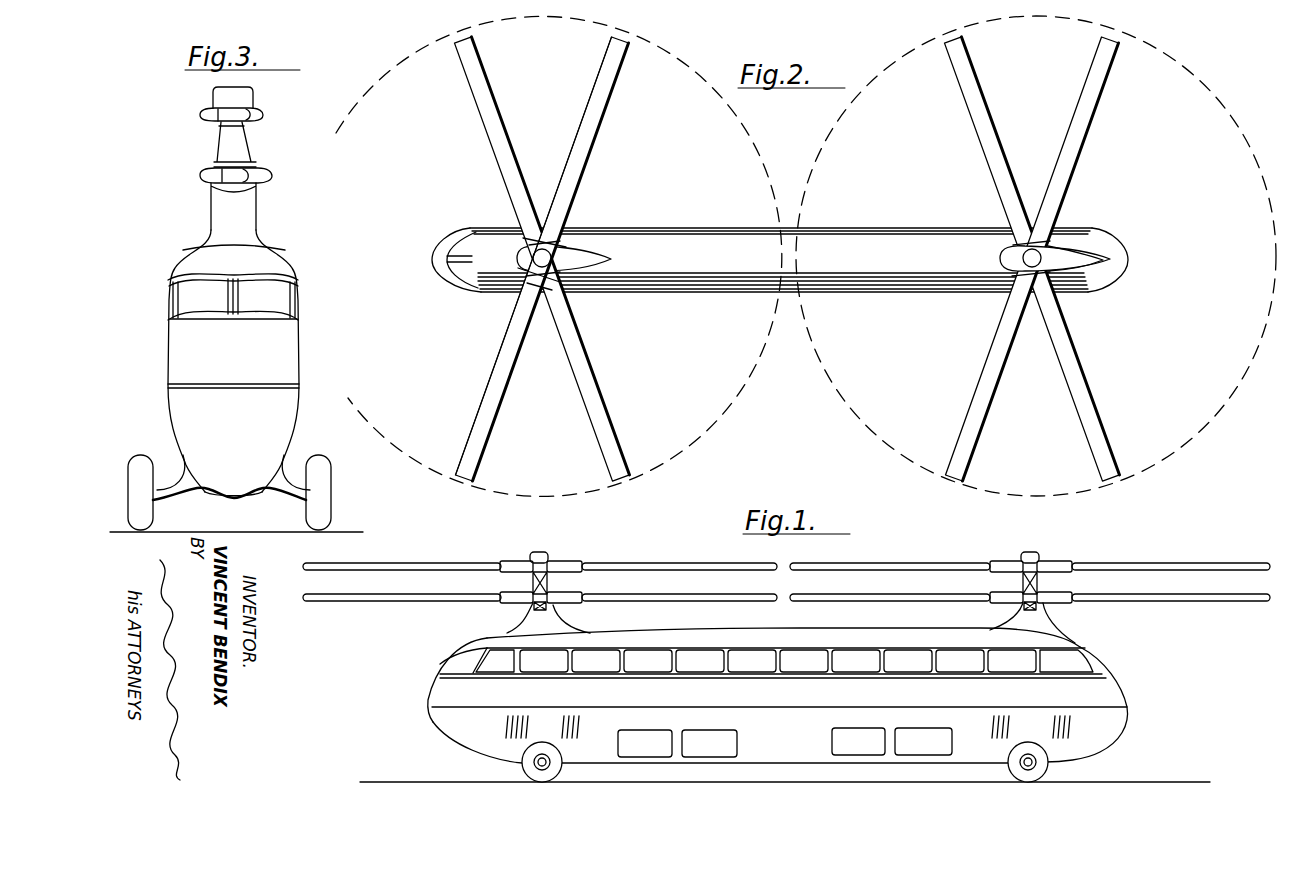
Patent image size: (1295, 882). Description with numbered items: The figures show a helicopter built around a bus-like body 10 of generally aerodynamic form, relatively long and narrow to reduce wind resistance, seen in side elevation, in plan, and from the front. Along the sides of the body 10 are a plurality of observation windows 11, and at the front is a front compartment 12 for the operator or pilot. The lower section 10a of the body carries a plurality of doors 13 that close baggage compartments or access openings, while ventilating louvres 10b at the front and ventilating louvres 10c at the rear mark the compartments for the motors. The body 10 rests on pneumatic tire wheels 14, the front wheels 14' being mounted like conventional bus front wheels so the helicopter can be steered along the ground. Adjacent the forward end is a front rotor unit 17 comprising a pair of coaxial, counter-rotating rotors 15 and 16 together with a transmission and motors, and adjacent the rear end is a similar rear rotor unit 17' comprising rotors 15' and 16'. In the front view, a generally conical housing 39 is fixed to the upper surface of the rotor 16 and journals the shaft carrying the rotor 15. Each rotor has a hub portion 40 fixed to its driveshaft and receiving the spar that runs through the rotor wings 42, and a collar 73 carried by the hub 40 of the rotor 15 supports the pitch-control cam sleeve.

In FIG. 3, the bus-like body 10 is at (165, 366).
In FIG. 2, the bus-like body 10 is at (834, 226).
In FIG. 1, the bus-like body 10 is at (1124, 679).
In FIG. 3, the lower section of the body 10a is at (202, 430).
In FIG. 1, the lower section of the body 10a is at (1103, 728).
In FIG. 1, the ventilating louvres 10b is at (560, 725).
In FIG. 1, the ventilating louvres 10c is at (1012, 730).
In FIG. 3, the observation windows 11 is at (250, 292).
In FIG. 1, the observation windows 11 is at (813, 658).
In FIG. 2, the front compartment 12 is at (440, 242).
In FIG. 1, the front compartment 12 is at (432, 666).
In FIG. 1, the doors 13 is at (698, 745).
In FIG. 1, the pneumatic tire wheels 14 is at (1060, 762).
In FIG. 3, the front wheels 14' is at (244, 493).
In FIG. 1, the front wheels 14' is at (507, 762).
In FIG. 3, the rotor 15 is at (252, 102).
In FIG. 2, the rotor 15 is at (552, 259).
In FIG. 1, the rotor 15 is at (540, 553).
In FIG. 2, the rotor 15' is at (1042, 259).
In FIG. 1, the rotor 15' is at (1030, 551).
In FIG. 3, the rotor 16 is at (248, 157).
In FIG. 2, the rotor 16 is at (542, 259).
In FIG. 1, the rotor 16 is at (540, 588).
In FIG. 2, the rotor 16' is at (1032, 259).
In FIG. 1, the rotor 16' is at (1030, 587).
In FIG. 3, the front rotor unit 17 is at (199, 206).
In FIG. 2, the front rotor unit 17 is at (582, 230).
In FIG. 1, the front rotor unit 17 is at (560, 577).
In FIG. 2, the rear rotor unit 17' is at (1061, 232).
In FIG. 1, the rear rotor unit 17' is at (1038, 583).
In FIG. 3, the conical housing 39 is at (222, 143).
In FIG. 2, the hub portion 40 is at (541, 284).
In FIG. 2, the rotor wings 42 is at (604, 104).
In FIG. 3, the collar 73 is at (213, 96).
In FIG. 2, the collar 73 is at (538, 250).